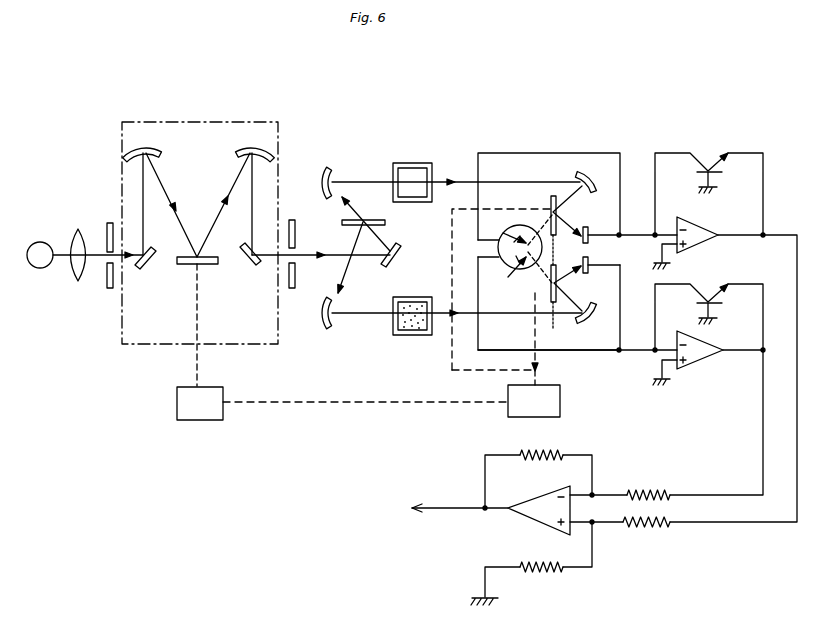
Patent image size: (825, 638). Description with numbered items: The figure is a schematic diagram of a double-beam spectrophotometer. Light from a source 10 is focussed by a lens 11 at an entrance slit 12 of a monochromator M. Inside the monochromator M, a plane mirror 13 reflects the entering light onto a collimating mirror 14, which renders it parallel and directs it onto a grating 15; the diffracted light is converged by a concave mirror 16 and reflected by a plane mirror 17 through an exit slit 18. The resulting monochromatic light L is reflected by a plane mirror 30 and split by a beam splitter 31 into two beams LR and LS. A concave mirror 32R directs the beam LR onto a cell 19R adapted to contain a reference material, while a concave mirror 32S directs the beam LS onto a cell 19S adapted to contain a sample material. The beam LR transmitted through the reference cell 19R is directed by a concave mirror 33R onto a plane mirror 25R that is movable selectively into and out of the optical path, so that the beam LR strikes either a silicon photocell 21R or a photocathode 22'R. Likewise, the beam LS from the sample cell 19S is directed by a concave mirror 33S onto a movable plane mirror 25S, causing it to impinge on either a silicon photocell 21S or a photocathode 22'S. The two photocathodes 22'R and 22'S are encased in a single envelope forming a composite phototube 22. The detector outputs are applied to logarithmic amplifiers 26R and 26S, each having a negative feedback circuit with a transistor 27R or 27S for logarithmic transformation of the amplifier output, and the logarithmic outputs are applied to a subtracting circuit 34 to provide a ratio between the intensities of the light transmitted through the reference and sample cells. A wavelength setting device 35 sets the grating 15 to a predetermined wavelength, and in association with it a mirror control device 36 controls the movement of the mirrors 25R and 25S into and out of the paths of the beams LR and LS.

The light source 10 is at (38, 270).
The lens 11 is at (75, 276).
The entrance slit 12 is at (107, 252).
The plane mirror 13 is at (147, 264).
The collimating mirror 14 is at (153, 155).
The grating 15 is at (192, 267).
The concave mirror 16 is at (243, 154).
The plane mirror 17 is at (246, 268).
The exit slit 18 is at (297, 256).
The reference cell 19R is at (413, 162).
The sample cell 19S is at (412, 337).
The silicon photocell 21R is at (589, 229).
The silicon photocell 21S is at (589, 273).
The composite phototube 22 is at (502, 249).
The photocathode 22'R is at (466, 231).
The photocathode 22'S is at (509, 278).
The plane mirror 25R is at (550, 200).
The plane mirror 25S is at (550, 286).
The logarithmic amplifier 26R is at (718, 243).
The logarithmic amplifier 26S is at (712, 367).
The transistor 27R is at (712, 157).
The transistor 27S is at (707, 288).
The plane mirror 30 is at (393, 258).
The beam splitter 31 is at (373, 220).
The concave mirror 32R is at (330, 169).
The concave mirror 32S is at (332, 331).
The concave mirror 33R is at (591, 172).
The concave mirror 33S is at (596, 328).
The subtracting circuit 34 is at (532, 517).
The wavelength setting device 35 is at (200, 419).
The mirror control device 36 is at (515, 410).
The monochromator M is at (197, 121).
The monochromatic light L is at (313, 252).
The reference light beam LR is at (375, 178).
The sample light beam LS is at (368, 318).